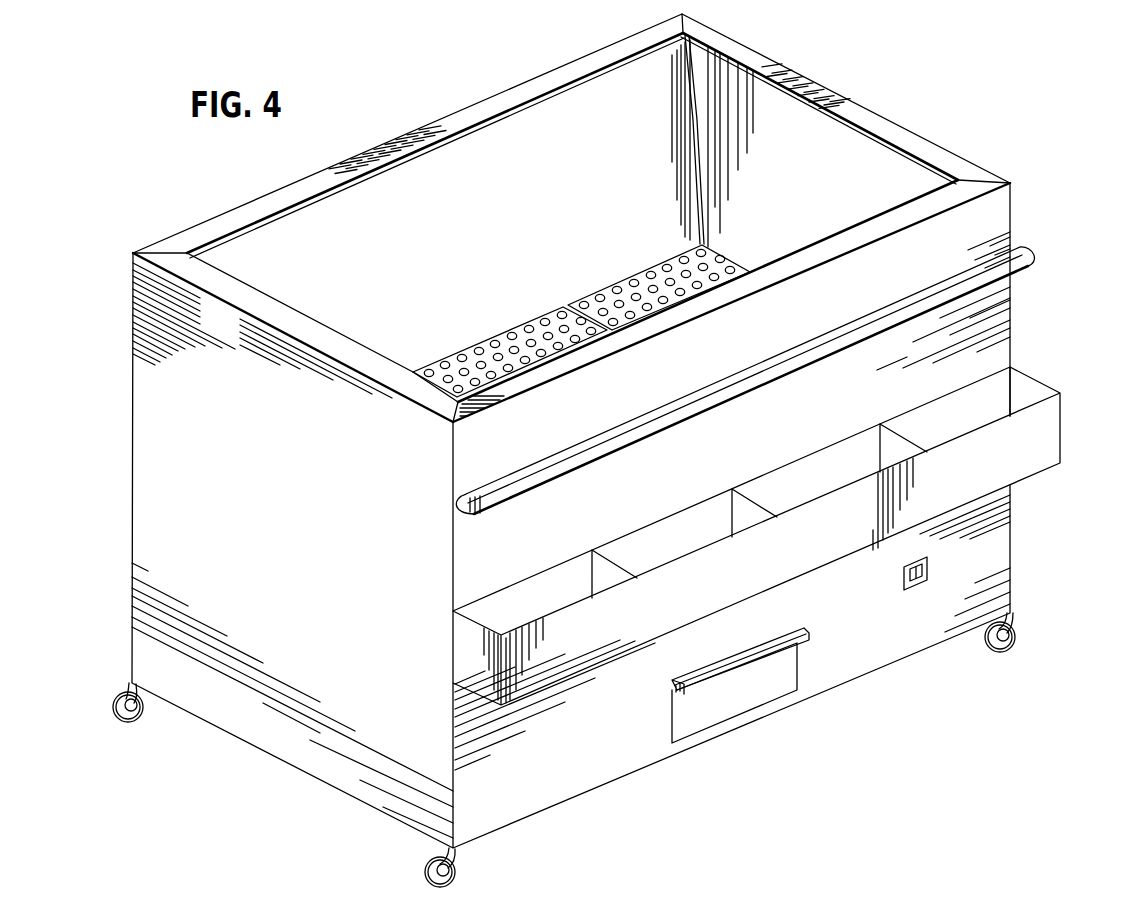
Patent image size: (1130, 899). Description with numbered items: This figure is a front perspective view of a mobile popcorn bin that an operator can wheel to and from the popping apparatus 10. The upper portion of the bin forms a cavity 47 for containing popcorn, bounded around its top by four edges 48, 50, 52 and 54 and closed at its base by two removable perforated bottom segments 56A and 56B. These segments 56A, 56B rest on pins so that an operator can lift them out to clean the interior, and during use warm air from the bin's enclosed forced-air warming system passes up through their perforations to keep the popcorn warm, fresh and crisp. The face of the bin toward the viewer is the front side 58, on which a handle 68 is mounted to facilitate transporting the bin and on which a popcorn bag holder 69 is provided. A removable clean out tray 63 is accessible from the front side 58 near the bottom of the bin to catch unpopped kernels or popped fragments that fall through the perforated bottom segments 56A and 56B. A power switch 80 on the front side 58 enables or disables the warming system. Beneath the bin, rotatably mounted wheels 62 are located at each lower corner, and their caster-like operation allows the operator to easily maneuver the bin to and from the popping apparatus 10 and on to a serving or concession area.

The popping apparatus 10 is at (860, 66).
The cavity 47 is at (373, 205).
The edge 48 is at (472, 123).
The edge 50 is at (885, 135).
The edge 52 is at (927, 197).
The edge 54 is at (243, 285).
The removable perforated bottom segment 56A is at (529, 288).
The removable perforated bottom segment 56B is at (614, 255).
The front side 58 is at (811, 441).
The wheels 62 is at (427, 873).
The removable clean out tray 63 is at (755, 693).
The handle 68 is at (980, 287).
The popcorn bag holder 69 is at (577, 658).
The power switch 80 is at (910, 590).